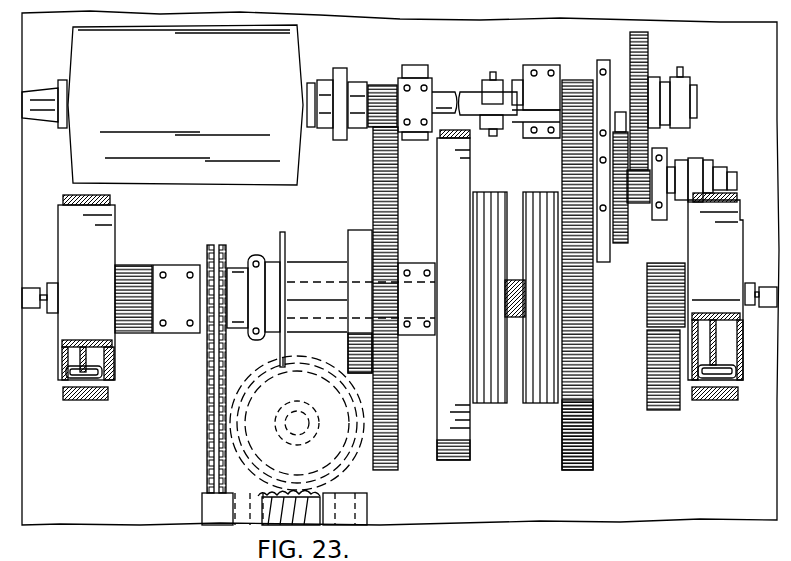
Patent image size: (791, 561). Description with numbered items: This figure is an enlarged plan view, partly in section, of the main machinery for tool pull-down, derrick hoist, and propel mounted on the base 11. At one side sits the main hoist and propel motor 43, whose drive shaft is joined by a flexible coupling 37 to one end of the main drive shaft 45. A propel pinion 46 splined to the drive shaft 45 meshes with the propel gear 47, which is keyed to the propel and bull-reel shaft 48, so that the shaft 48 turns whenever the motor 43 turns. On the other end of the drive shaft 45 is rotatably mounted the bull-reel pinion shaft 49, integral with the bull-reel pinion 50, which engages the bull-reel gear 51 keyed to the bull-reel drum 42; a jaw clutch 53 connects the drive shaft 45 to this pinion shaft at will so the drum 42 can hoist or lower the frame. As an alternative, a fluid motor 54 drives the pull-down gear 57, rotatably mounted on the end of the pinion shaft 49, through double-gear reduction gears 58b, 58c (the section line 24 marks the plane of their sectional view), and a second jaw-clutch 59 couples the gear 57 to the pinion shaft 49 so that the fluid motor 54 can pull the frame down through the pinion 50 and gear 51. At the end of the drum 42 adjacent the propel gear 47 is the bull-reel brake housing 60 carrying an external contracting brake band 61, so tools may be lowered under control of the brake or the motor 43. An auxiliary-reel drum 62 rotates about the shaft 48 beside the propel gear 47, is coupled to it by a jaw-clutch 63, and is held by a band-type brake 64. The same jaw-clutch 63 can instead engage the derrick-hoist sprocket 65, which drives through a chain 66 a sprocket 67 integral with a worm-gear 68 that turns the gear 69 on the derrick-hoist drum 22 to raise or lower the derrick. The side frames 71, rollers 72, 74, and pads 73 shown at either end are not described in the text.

The base 11 is at (110, 510).
The derrick-hoist drum 22 is at (323, 457).
The section line for Figure 24 is at (528, 140).
The flexible coupling 37 is at (340, 70).
The bull-reel drum 42 is at (531, 396).
The main hoist and propel motor 43 is at (143, 93).
The main drive shaft 45 is at (447, 90).
The propel pinion 46 is at (384, 85).
The propel gear 47 is at (374, 171).
The propel and bull-reel shaft 48 is at (307, 280).
The bull-reel pinion shaft 49 is at (517, 80).
The bull-reel pinion 50 is at (580, 82).
The bull-reel gear 51 is at (594, 437).
The jaw clutch 53 is at (493, 70).
The fluid motor 54 is at (713, 163).
The pull-down gear 57 is at (649, 47).
The double-gear reduction gear 58b is at (618, 128).
The double-gear reduction gear 58c is at (660, 174).
The second jaw-clutch 59 is at (683, 72).
The bull-reel brake housing 60 is at (455, 360).
The brake band 61 is at (438, 462).
The auxiliary-reel drum 62 is at (313, 303).
The jaw-clutch 63 is at (268, 268).
The band-type brake 64 is at (361, 236).
The derrick-hoist sprocket 65 is at (200, 293).
The chain 66 is at (206, 418).
The sprocket 67 is at (217, 507).
The worm-gear 68 is at (355, 508).
The gear 69 is at (285, 495).
The side frame 71 is at (95, 242).
The roller 72 is at (134, 282).
The pad 73 is at (70, 402).
The roller 74 is at (648, 368).